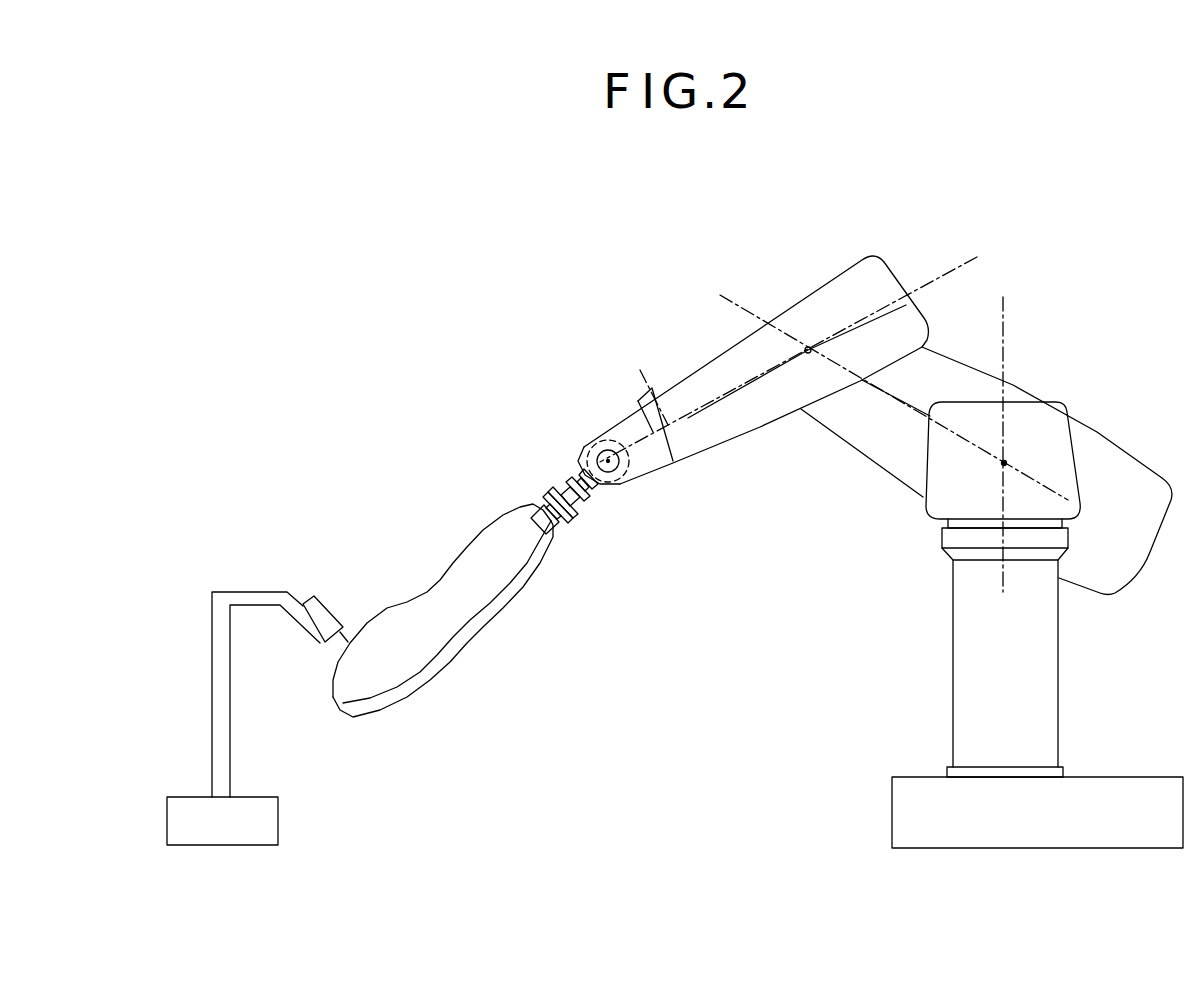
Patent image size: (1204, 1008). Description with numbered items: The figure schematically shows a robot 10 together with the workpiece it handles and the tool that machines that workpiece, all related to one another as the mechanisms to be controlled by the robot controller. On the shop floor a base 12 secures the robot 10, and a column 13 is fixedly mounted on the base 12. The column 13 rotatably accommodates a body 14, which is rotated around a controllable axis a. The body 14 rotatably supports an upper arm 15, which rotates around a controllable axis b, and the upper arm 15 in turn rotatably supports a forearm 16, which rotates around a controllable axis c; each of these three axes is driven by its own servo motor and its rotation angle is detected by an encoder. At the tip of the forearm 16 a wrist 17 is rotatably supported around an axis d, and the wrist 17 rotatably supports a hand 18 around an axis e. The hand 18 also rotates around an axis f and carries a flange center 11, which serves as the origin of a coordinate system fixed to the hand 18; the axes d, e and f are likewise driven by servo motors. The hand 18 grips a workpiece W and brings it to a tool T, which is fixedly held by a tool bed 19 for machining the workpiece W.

The robot 10 is at (1034, 373).
The flange center 11 is at (578, 516).
The base 12 is at (1040, 848).
The column 13 is at (1060, 688).
The body 14 is at (1067, 463).
The upper arm 15 is at (880, 458).
The forearm 16 is at (715, 353).
The wrist 17 is at (652, 469).
The hand 18 is at (600, 496).
The tool bed 19 is at (170, 818).
The workpiece W is at (397, 668).
The tool T is at (322, 605).
The controllable axis a is at (1007, 320).
The controllable axis b is at (1005, 462).
The controllable axis c is at (808, 348).
The axis d is at (957, 265).
The axis e is at (587, 445).
The axis f is at (640, 370).